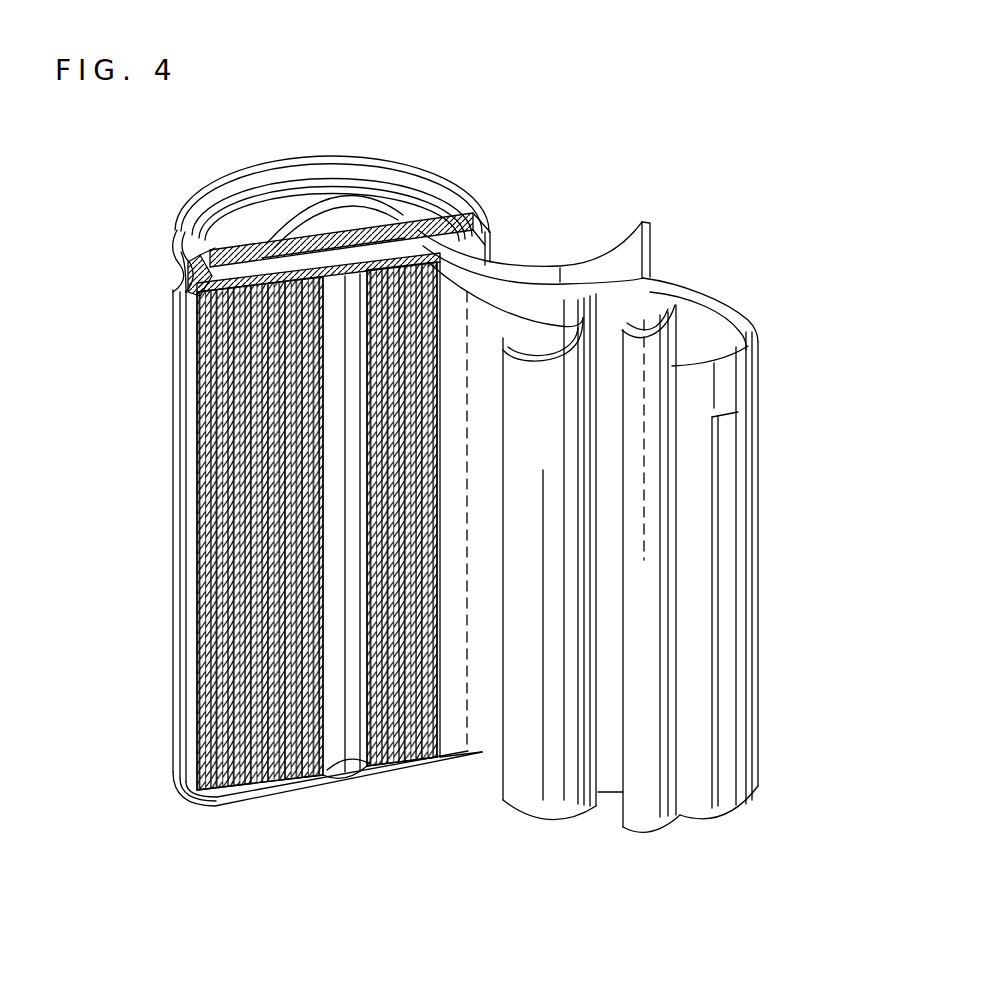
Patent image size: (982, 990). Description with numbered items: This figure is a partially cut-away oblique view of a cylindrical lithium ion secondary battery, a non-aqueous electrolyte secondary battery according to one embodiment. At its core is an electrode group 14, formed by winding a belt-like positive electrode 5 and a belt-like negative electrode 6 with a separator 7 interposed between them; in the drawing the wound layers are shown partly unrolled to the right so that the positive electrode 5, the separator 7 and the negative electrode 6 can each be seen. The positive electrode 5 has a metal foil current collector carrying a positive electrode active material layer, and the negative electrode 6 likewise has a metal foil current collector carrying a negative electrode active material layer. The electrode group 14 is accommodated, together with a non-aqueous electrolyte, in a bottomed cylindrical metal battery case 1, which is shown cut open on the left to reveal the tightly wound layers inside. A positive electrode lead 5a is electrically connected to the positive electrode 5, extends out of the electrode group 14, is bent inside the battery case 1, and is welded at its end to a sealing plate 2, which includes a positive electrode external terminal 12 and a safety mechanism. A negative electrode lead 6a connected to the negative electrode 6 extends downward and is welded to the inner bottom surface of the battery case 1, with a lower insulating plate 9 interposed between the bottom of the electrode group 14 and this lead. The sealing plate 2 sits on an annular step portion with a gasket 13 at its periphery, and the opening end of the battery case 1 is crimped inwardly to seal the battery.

The battery case 1 is at (178, 572).
The sealing plate 2 is at (438, 208).
The positive electrode 5 is at (577, 697).
The positive electrode lead 5a is at (200, 289).
The negative electrode 6 is at (732, 381).
The negative electrode lead 6a is at (725, 452).
The separator 7 is at (607, 262).
The lower insulating plate 9 is at (312, 788).
The positive electrode external terminal 12 is at (303, 208).
The gasket 13 is at (178, 233).
The electrode group 14 is at (745, 300).